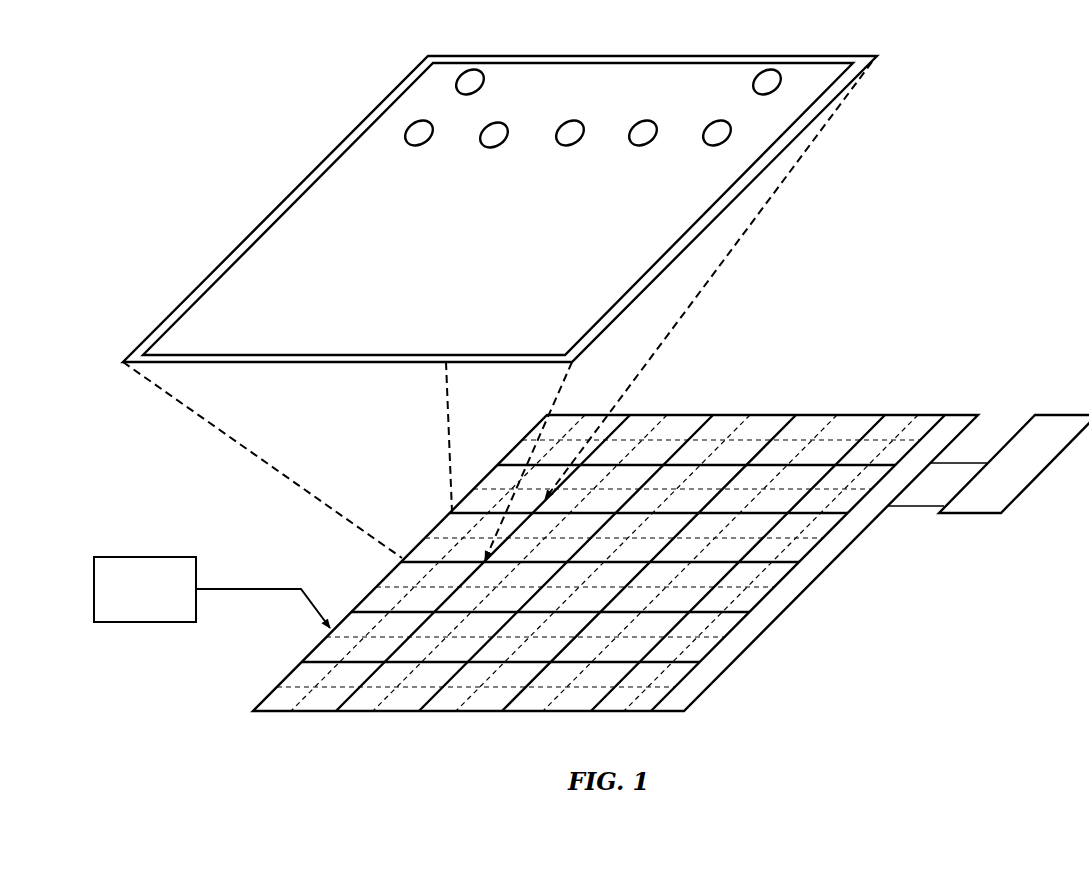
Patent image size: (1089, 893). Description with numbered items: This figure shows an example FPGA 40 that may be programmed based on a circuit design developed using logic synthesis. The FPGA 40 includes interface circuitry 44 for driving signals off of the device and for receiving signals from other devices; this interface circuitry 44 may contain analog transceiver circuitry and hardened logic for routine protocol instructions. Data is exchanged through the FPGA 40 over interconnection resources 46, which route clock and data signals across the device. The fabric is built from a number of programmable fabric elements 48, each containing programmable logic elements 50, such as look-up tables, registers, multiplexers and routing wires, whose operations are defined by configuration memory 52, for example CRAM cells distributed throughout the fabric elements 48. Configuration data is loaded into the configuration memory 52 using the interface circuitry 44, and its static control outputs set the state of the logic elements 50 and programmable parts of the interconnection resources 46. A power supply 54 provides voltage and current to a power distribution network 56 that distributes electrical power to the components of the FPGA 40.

The FPGA 40 is at (830, 389).
The interface circuitry 44 is at (1043, 466).
The interconnection resources 46 is at (280, 206).
The programmable fabric element 48 is at (319, 64).
The programmable logic element 50 is at (630, 99).
The configuration memory 52 is at (630, 99).
The power supply 54 is at (139, 557).
The power distribution network 56 is at (323, 674).